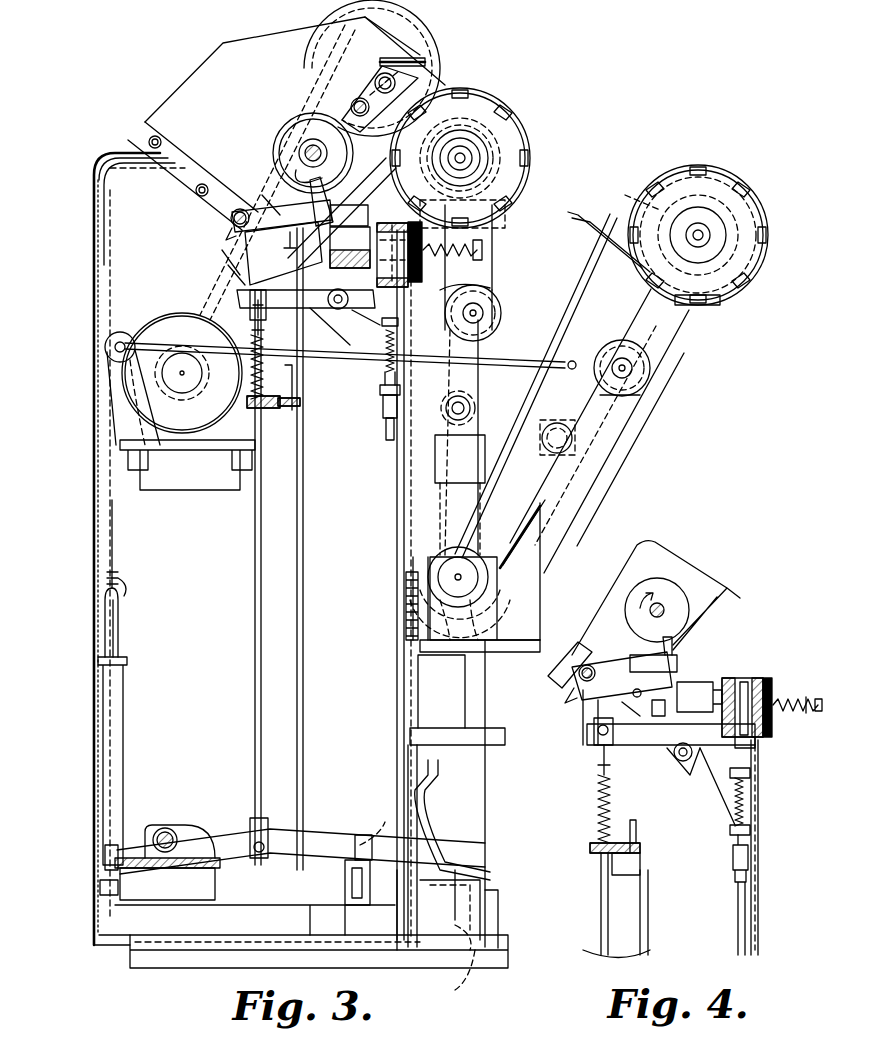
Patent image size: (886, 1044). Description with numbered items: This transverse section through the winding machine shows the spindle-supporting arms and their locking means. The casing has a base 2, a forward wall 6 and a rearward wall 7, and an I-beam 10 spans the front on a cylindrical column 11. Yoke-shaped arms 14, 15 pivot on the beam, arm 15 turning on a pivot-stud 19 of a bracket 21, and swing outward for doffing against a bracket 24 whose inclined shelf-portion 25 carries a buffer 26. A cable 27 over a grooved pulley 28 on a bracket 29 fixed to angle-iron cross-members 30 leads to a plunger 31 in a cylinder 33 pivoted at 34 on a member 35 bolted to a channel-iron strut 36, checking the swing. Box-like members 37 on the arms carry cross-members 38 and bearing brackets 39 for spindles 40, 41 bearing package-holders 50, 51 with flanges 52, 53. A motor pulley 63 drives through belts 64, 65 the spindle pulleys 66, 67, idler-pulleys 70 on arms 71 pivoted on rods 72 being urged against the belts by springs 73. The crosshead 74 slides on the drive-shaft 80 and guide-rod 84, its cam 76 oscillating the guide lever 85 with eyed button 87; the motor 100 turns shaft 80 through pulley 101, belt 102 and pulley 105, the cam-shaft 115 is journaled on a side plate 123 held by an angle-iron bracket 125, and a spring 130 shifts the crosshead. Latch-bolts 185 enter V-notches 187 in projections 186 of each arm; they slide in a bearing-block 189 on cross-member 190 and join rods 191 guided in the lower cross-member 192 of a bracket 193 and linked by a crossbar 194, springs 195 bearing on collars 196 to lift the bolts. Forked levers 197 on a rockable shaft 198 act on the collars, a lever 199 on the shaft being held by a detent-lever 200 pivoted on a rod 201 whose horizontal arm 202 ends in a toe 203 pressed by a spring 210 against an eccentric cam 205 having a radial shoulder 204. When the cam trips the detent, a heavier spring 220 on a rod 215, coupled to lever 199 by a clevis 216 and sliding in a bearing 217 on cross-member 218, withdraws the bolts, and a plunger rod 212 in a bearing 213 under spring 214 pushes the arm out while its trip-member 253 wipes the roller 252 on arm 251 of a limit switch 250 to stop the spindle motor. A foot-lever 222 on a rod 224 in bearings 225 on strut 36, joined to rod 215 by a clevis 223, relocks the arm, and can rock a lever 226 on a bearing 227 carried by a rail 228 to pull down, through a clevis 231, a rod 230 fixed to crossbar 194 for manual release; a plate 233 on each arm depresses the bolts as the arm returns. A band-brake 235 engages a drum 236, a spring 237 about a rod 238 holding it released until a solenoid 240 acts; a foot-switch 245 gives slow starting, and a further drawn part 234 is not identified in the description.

In FIG. 3, the base 2 is at (485, 960).
In FIG. 3, the forward vertical wall 6 is at (407, 702).
In FIG. 3, the rearward wall 7 is at (93, 650).
In FIG. 3, the I-beam cross-member 10 is at (463, 712).
In FIG. 3, the cylindrical column 11 is at (470, 830).
In FIG. 3, the yoke-shaped arm 14 is at (496, 426).
In FIG. 3, the yoke-shaped arm 15 is at (668, 335).
In FIG. 3, the pivot-stud 19 is at (470, 585).
In FIG. 3, the bracket 21 is at (492, 628).
In FIG. 3, the stop bracket 24 is at (530, 582).
In FIG. 3, the inclined shelf-portion 25 is at (545, 545).
In FIG. 3, the rubber buffer pad 26 is at (560, 512).
In FIG. 3, the cord or wire cable 27 is at (116, 545).
In FIG. 3, the grooved pulley 28 is at (122, 333).
In FIG. 3, the bracket 29 is at (135, 392).
In FIG. 3, the angle-iron cross-member 30 is at (124, 480).
In FIG. 3, the plunger 31 is at (113, 640).
In FIG. 3, the cylinder 33 is at (120, 780).
In FIG. 3, the pivotal mounting 34 is at (105, 848).
In FIG. 3, the member 35 is at (100, 884).
In FIG. 3, the channel-iron strut 36 is at (215, 886).
In FIG. 3, the hollow box-like member 37 is at (490, 292).
In FIG. 3, the cross-member 38 is at (500, 225).
In FIG. 3, the bearing bracket 39 is at (492, 150).
In FIG. 3, the winding spindle 40 is at (468, 142).
In FIG. 3, the winding spindle 41 is at (703, 228).
In FIG. 3, the package-holder 50 is at (525, 172).
In FIG. 3, the package-holder 51 is at (766, 198).
In FIG. 3, the flange 52 is at (528, 160).
In FIG. 3, the flange 53 is at (766, 232).
In FIG. 3, the motor pulley 63 is at (450, 630).
In FIG. 3, the belt 64 is at (495, 335).
In FIG. 3, the belt 65 is at (585, 478).
In FIG. 3, the spindle pulley 66 is at (490, 142).
In FIG. 3, the spindle pulley 67 is at (715, 245).
In FIG. 3, the flanged idler-pulley 70 is at (500, 306).
In FIG. 3, the idler arm 71 is at (488, 348).
In FIG. 3, the rod 72 is at (470, 405).
In FIG. 3, the coiled spring 73 is at (590, 442).
In FIG. 3, the carriage or crosshead 74 is at (420, 80).
In FIG. 3, the cam 76 is at (375, 80).
In FIG. 3, the drive-shaft 80 is at (380, 72).
In FIG. 3, the guide-rod 84 is at (358, 100).
In FIG. 3, the strand-guide lever 85 is at (424, 56).
In FIG. 3, the guide-button 87 is at (405, 60).
In FIG. 3, the motor 100 is at (172, 320).
In FIG. 3, the pulley 101 is at (186, 392).
In FIG. 3, the belt 102 is at (226, 250).
In FIG. 3, the pulley 105 is at (404, 56).
In FIG. 3, the cam-shaft 115 is at (300, 152).
In FIG. 4, the cam-shaft 115 is at (665, 606).
In FIG. 3, the vertical side plate 123 is at (205, 77).
In FIG. 4, the vertical side plate 123 is at (695, 578).
In FIG. 3, the angle-iron bracket 125 is at (140, 128).
In FIG. 4, the angle-iron bracket 125 is at (562, 658).
In FIG. 3, the spring 130 is at (350, 104).
In FIG. 3, the latch-bolt 185 is at (346, 252).
In FIG. 4, the latch-bolt 185 is at (738, 678).
In FIG. 3, the lateral projection 186 is at (386, 186).
In FIG. 3, the V-shaped notch 187 is at (612, 250).
In FIG. 3, the bearing-block 189 is at (375, 302).
In FIG. 4, the bearing-block 189 is at (765, 678).
In FIG. 3, the angle-iron cross-member 190 is at (340, 284).
In FIG. 4, the angle-iron cross-member 190 is at (708, 722).
In FIG. 3, the rod 191 is at (384, 412).
In FIG. 4, the rod 191 is at (755, 745).
In FIG. 3, the lower cross-member 192 is at (384, 400).
In FIG. 4, the lower cross-member 192 is at (730, 828).
In FIG. 3, the rectangular bracket 193 is at (383, 352).
In FIG. 4, the rectangular bracket 193 is at (728, 772).
In FIG. 3, the crossbar 194 is at (386, 430).
In FIG. 4, the crossbar 194 is at (735, 880).
In FIG. 3, the helical spring 195 is at (383, 376).
In FIG. 4, the helical spring 195 is at (746, 797).
In FIG. 3, the collar 196 is at (385, 320).
In FIG. 4, the collar 196 is at (750, 775).
In FIG. 3, the lever 197 is at (348, 322).
In FIG. 4, the lever 197 is at (700, 762).
In FIG. 3, the rockable shaft 198 is at (345, 307).
In FIG. 4, the rockable shaft 198 is at (682, 752).
In FIG. 3, the lever 199 is at (272, 290).
In FIG. 4, the lever 199 is at (596, 765).
In FIG. 3, the detent-lever 200 is at (274, 200).
In FIG. 4, the detent-lever 200 is at (625, 656).
In FIG. 3, the rod 201 is at (230, 218).
In FIG. 4, the rod 201 is at (578, 680).
In FIG. 3, the horizontal arm 202 is at (265, 196).
In FIG. 4, the horizontal arm 202 is at (583, 708).
In FIG. 3, the pointed toe 203 is at (294, 178).
In FIG. 4, the pointed toe 203 is at (692, 682).
In FIG. 3, the radial shoulder 204 is at (306, 152).
In FIG. 4, the radial shoulder 204 is at (668, 608).
In FIG. 3, the eccentric cam 205 is at (312, 120).
In FIG. 4, the eccentric cam 205 is at (660, 585).
In FIG. 3, the helical spring 210 is at (226, 232).
In FIG. 4, the helical spring 210 is at (585, 698).
In FIG. 3, the plunger rod 212 is at (475, 250).
In FIG. 4, the plunger rod 212 is at (800, 698).
In FIG. 3, the bearing 213 is at (300, 222).
In FIG. 4, the bearing 213 is at (698, 690).
In FIG. 3, the helical spring 214 is at (484, 262).
In FIG. 4, the helical spring 214 is at (802, 712).
In FIG. 3, the rod 215 is at (255, 542).
In FIG. 4, the rod 215 is at (603, 905).
In FIG. 3, the clevis 216 is at (235, 288).
In FIG. 4, the clevis 216 is at (592, 745).
In FIG. 3, the bearing 217 is at (270, 405).
In FIG. 4, the bearing 217 is at (592, 850).
In FIG. 3, the angle-iron cross-member 218 is at (292, 376).
In FIG. 4, the angle-iron cross-member 218 is at (636, 842).
In FIG. 3, the helical spring 220 is at (202, 374).
In FIG. 4, the helical spring 220 is at (598, 805).
In FIG. 3, the foot-lever 222 is at (318, 845).
In FIG. 3, the clevis 223 is at (262, 825).
In FIG. 3, the rod 224 is at (172, 838).
In FIG. 3, the bearing 225 is at (150, 826).
In FIG. 3, the lever 226 is at (348, 880).
In FIG. 3, the bearing 227 is at (360, 917).
In FIG. 3, the angle-iron rail 228 is at (400, 955).
In FIG. 3, the rod 230 is at (395, 540).
In FIG. 3, the clevis 231 is at (376, 834).
In FIG. 3, the projecting plate 233 is at (584, 224).
In FIG. 3, the arc 234 is at (470, 286).
In FIG. 3, the band-brake 235 is at (395, 562).
In FIG. 3, the drum 236 is at (450, 640).
In FIG. 3, the spring 237 is at (398, 630).
In FIG. 3, the rod 238 is at (422, 782).
In FIG. 3, the solenoid 240 is at (470, 955).
In FIG. 3, the foot-switch 245 is at (495, 910).
In FIG. 3, the limit switch 250 is at (349, 215).
In FIG. 4, the limit switch 250 is at (636, 654).
In FIG. 3, the rockable arm 251 is at (226, 258).
In FIG. 4, the rockable arm 251 is at (623, 711).
In FIG. 3, the roller 252 is at (222, 272).
In FIG. 4, the roller 252 is at (650, 710).
In FIG. 3, the trip-member 253 is at (280, 244).
In FIG. 4, the trip-member 253 is at (651, 693).